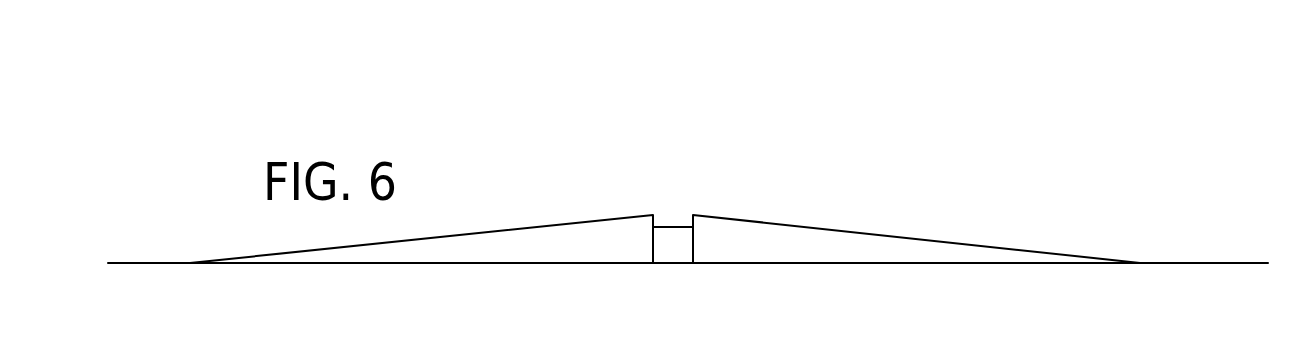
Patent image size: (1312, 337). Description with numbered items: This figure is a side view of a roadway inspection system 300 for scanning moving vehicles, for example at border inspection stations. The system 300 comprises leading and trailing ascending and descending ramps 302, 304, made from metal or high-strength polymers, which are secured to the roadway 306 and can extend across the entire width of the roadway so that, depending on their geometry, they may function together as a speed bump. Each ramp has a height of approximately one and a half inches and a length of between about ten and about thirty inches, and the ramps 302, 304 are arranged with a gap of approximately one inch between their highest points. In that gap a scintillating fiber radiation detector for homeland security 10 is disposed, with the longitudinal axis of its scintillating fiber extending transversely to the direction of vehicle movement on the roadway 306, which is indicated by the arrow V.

The roadway inspection system 300 is at (748, 125).
The leading ascending ramp 302 is at (556, 245).
The trailing descending ramp 304 is at (782, 237).
The roadway 306 is at (1240, 262).
The scintillating fiber radiation detector for homeland security 10 is at (675, 243).